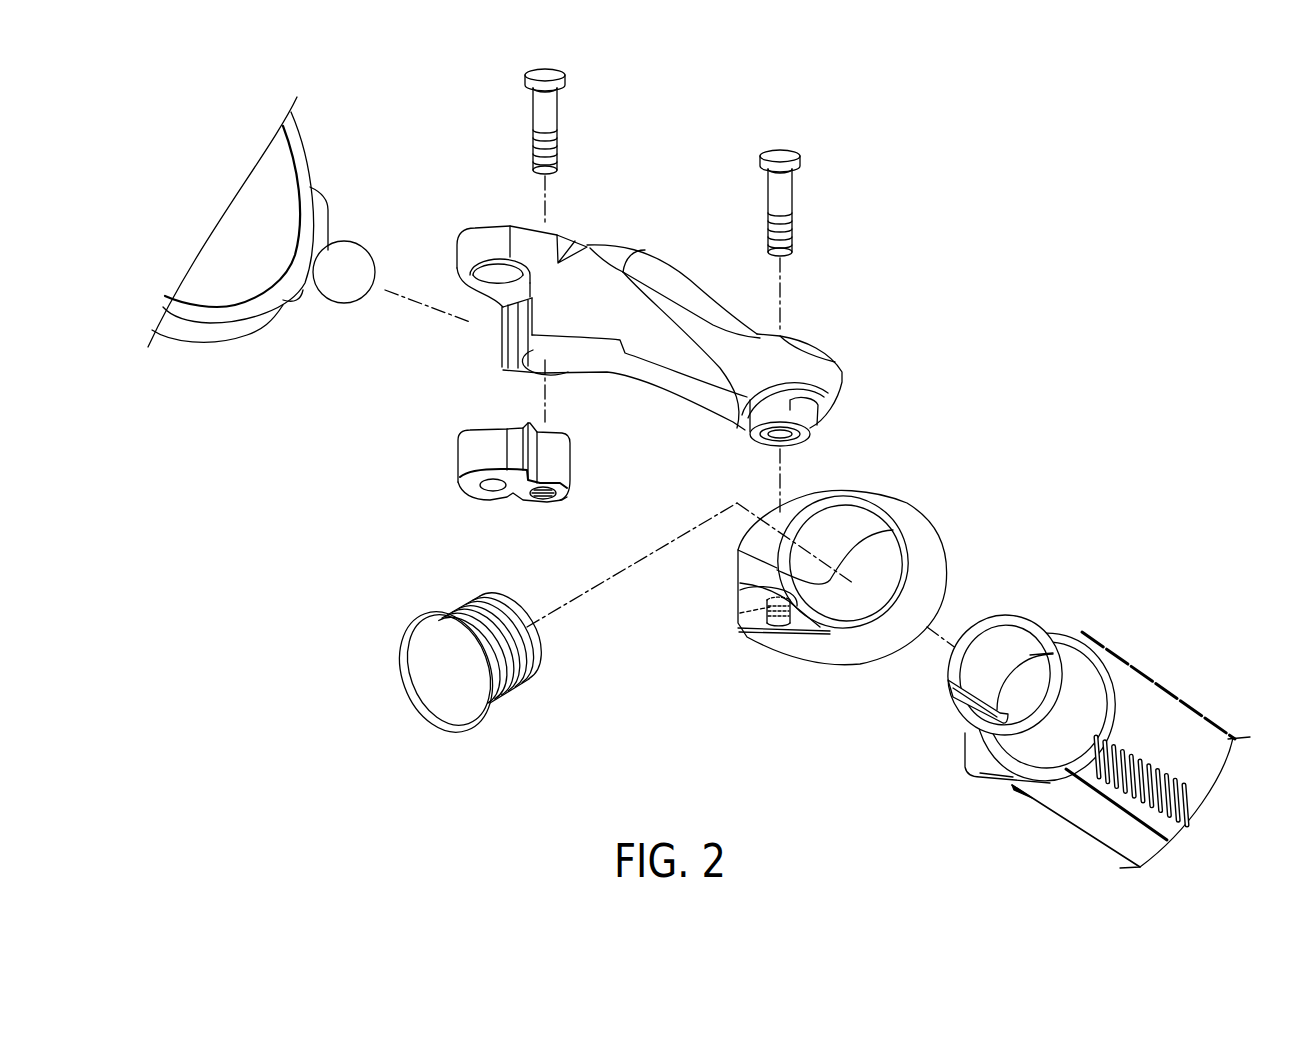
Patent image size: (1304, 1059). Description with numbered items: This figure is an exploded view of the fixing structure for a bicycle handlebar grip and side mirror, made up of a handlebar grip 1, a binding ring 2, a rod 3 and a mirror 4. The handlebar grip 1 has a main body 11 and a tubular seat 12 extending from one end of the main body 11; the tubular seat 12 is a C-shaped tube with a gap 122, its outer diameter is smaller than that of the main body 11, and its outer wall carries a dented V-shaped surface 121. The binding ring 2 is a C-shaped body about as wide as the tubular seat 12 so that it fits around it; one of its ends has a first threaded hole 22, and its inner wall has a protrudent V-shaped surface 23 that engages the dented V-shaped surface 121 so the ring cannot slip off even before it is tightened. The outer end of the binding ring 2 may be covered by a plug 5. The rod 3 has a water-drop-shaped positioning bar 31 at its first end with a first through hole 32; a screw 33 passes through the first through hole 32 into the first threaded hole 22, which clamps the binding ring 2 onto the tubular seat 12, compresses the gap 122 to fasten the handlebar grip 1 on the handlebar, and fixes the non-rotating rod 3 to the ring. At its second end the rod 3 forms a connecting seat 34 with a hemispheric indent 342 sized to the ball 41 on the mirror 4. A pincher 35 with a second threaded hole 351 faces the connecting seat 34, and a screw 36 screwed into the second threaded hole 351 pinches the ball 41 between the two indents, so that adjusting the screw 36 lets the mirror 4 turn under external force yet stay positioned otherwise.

The handlebar grip 1 is at (1070, 689).
The main body 11 is at (1142, 707).
The tubular seat 12 is at (1002, 647).
The dented V-shaped surface 121 is at (1067, 673).
The gap 122 is at (952, 694).
The binding ring 2 is at (840, 543).
The first threaded hole 22 is at (740, 613).
The protrudent V-shaped surface 23 is at (853, 517).
The rod 3 is at (611, 324).
The positioning bar 31 is at (740, 397).
The first through hole 32 is at (776, 436).
The screw 33 is at (790, 195).
The connecting seat 34 is at (484, 270).
The hemispheric indent 342 is at (490, 272).
The pincher 35 is at (505, 486).
The second threaded hole 351 is at (545, 497).
The screw 36 is at (543, 110).
The mirror 4 is at (215, 352).
The ball 41 is at (343, 293).
The plug 5 is at (447, 687).